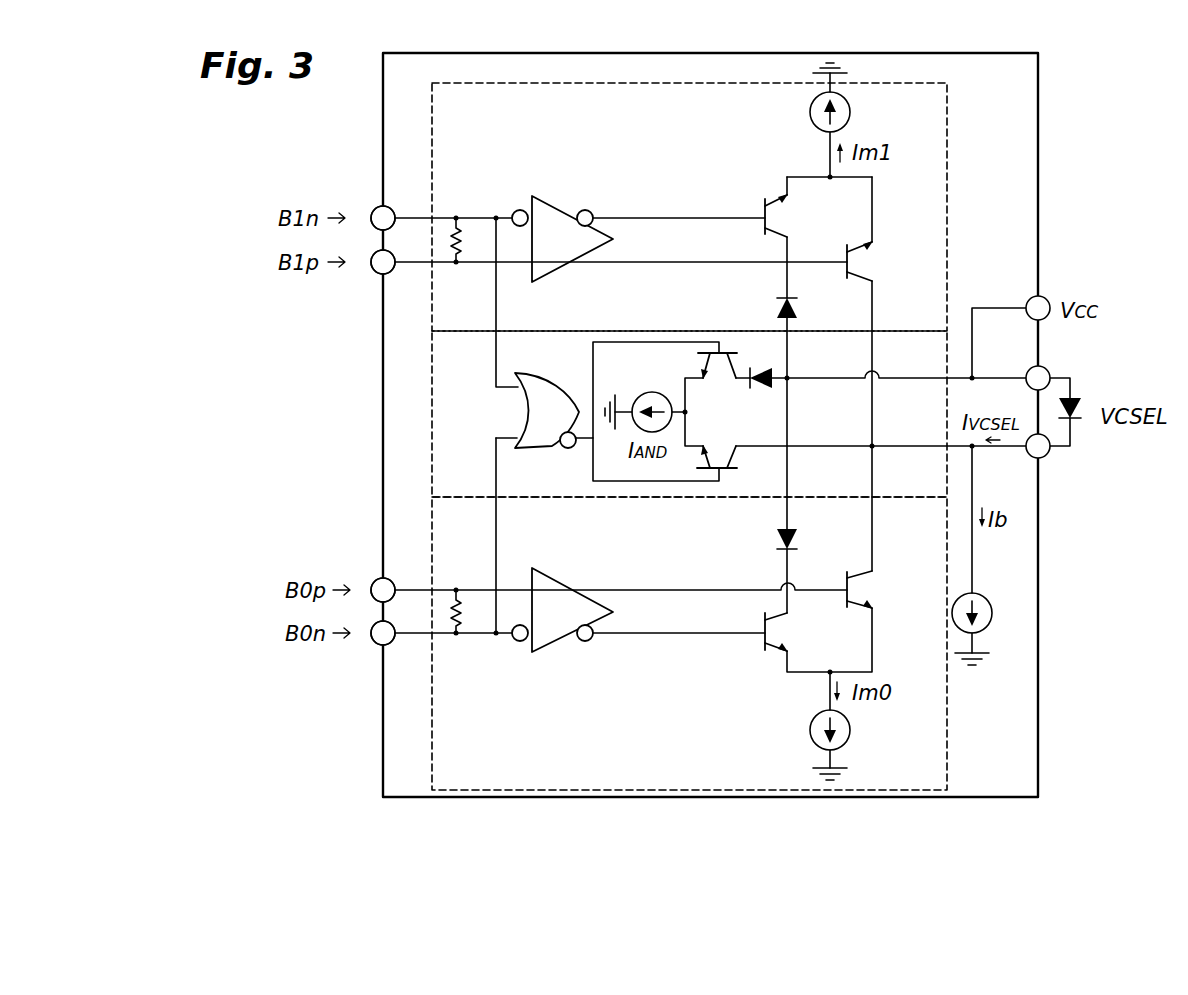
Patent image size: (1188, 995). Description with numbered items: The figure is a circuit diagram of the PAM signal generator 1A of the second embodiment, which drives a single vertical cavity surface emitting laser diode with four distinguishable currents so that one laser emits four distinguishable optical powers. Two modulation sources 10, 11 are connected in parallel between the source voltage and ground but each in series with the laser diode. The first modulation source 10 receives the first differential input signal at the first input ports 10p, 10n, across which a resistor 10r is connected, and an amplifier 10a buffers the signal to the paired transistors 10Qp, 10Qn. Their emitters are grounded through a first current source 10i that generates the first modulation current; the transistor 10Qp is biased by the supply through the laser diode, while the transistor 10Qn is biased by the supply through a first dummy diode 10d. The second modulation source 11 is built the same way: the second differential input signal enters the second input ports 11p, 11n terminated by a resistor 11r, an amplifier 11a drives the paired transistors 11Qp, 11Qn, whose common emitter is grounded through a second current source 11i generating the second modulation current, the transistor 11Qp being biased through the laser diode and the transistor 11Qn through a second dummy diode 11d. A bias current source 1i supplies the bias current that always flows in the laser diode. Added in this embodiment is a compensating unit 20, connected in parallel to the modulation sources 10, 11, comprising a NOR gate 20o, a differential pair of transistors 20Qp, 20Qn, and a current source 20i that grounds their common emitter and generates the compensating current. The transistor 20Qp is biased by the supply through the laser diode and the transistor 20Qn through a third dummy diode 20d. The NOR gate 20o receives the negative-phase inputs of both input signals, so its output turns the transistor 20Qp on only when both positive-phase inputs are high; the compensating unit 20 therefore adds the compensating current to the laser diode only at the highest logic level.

The PAM signal generator 1A is at (1093, 131).
The modulation source 11 is at (432, 312).
The second input port 11n is at (374, 210).
The second input port 11p is at (374, 270).
The resistor 11r is at (462, 228).
The amplifier 11a is at (558, 210).
The second current source 11i is at (852, 112).
The transistor 11Qn is at (783, 219).
The transistor 11Qp is at (862, 262).
The second dummy diode 11d is at (819, 304).
The compensating unit 20 is at (432, 408).
The NOR gate 20o is at (536, 413).
The current source 20i is at (656, 392).
The transistor 20Qn is at (721, 338).
The transistor 20Qp is at (719, 453).
The third dummy diode 20d is at (775, 387).
The modulation source 10 is at (432, 512).
The first input port 10p is at (375, 580).
The first input port 10n is at (375, 643).
The resistor 10r is at (462, 616).
The amplifier 10a is at (548, 585).
The first dummy diode 10d is at (779, 533).
The transistor 10Qn is at (783, 633).
The transistor 10Qp is at (862, 590).
The first current source 10i is at (810, 733).
The current source 1i is at (990, 600).